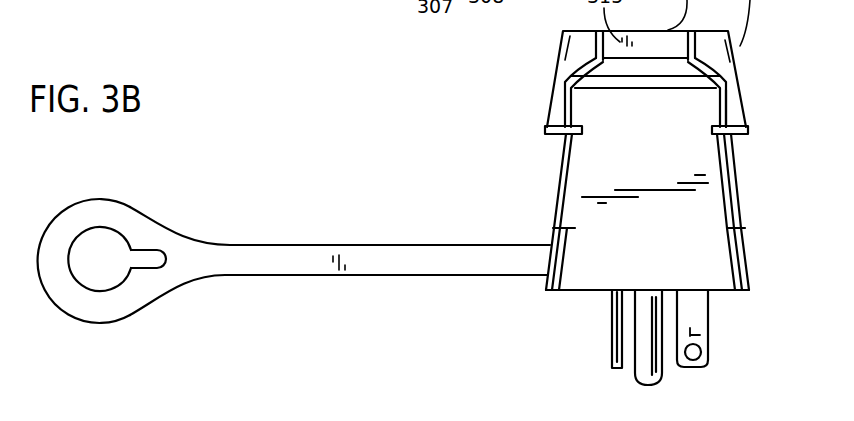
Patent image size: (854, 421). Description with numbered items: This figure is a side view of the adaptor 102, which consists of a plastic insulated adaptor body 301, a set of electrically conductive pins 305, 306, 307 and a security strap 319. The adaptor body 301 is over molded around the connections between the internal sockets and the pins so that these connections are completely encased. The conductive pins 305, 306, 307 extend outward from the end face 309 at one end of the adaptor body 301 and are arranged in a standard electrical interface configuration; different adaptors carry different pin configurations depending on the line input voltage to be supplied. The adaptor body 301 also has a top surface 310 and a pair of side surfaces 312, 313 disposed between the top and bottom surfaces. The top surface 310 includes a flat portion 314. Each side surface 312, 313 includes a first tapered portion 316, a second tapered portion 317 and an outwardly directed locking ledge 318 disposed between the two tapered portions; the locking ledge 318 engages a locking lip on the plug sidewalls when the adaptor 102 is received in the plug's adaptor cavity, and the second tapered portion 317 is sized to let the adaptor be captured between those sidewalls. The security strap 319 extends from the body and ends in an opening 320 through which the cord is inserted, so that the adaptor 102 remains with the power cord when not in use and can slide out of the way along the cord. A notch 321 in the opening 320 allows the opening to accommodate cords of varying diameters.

The adaptor 102 is at (452, 114).
The adaptor body 301 is at (742, 120).
The conductive pin 305 is at (610, 347).
The conductive pin 306 is at (712, 345).
The conductive pin 307 is at (653, 380).
The end face 309 is at (582, 293).
The top surface 310 is at (612, 168).
The side surface 312 is at (570, 190).
The side surface 313 is at (737, 170).
The flat portion 314 is at (670, 263).
The first tapered portion 316 is at (560, 218).
The second tapered portion 317 is at (560, 50).
The locking ledge 318 is at (545, 133).
The security strap 319 is at (297, 258).
The opening 320 is at (102, 242).
The notch 321 is at (147, 258).